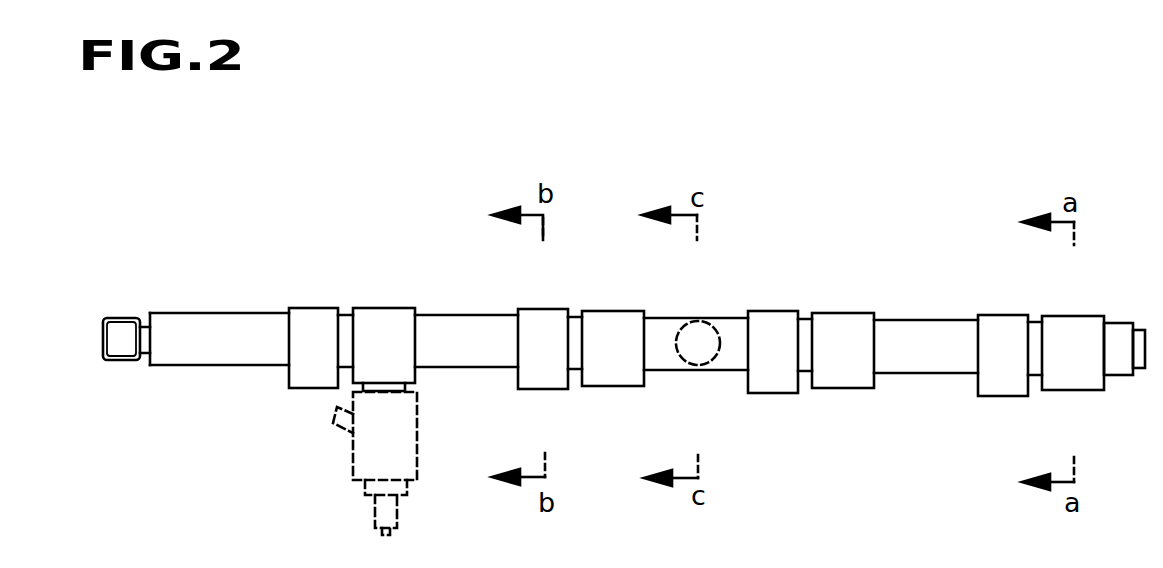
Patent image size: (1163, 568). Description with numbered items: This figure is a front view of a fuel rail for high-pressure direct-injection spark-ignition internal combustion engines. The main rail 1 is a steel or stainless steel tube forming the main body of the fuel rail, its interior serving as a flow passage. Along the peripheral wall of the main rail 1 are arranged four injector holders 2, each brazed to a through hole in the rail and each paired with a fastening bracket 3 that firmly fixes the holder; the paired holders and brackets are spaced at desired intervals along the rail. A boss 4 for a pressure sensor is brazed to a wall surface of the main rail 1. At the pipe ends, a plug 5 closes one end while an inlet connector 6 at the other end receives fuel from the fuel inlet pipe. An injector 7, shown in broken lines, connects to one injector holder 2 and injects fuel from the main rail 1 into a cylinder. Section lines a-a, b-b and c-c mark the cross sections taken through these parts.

The main rail 1 is at (470, 316).
The injector holder 2 is at (385, 318).
The fastening bracket 3 is at (312, 318).
The boss for a pressure sensor 4 is at (705, 364).
The plug 5 is at (1125, 328).
The inlet connector 6 is at (118, 327).
The injector 7 is at (410, 462).